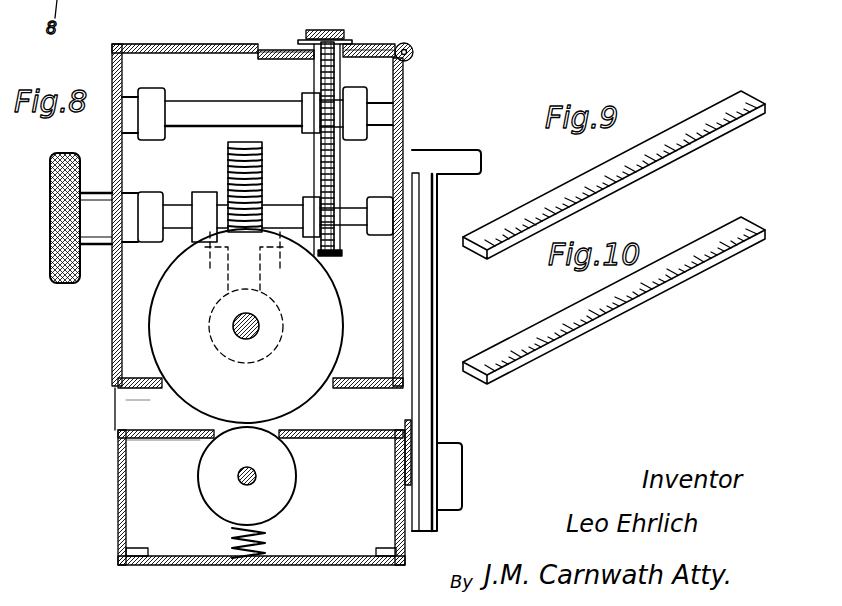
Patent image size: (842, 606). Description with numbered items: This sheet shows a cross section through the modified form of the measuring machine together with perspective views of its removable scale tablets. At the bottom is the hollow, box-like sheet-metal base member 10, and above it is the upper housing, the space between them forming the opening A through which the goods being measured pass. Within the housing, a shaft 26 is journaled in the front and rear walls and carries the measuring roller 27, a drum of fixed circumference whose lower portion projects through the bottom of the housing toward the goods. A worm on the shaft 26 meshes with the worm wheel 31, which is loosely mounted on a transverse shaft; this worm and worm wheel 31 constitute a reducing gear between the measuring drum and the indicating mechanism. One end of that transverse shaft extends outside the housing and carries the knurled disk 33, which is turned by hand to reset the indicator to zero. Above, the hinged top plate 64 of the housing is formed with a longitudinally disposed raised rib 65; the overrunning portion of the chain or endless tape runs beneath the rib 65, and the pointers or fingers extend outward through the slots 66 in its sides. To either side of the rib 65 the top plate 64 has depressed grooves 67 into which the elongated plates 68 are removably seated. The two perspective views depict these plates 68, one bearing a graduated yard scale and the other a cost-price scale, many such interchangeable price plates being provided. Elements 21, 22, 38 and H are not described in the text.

In FIG. 8, the base member 10 is at (115, 508).
In FIG. 8, the roller shaft 21 is at (258, 478).
In FIG. 8, the pressure roller 22 is at (212, 474).
In FIG. 8, the shaft 26 is at (244, 328).
In FIG. 8, the measuring roller 27 is at (246, 326).
In FIG. 8, the worm wheel 31 is at (254, 174).
In FIG. 8, the disk 33 is at (68, 286).
In FIG. 8, the upper shaft 38 is at (206, 126).
In FIG. 8, the top plate 64 is at (198, 45).
In FIG. 8, the raised rib 65 is at (331, 35).
In FIG. 8, the slots 66 is at (302, 42).
In FIG. 8, the grooves 67 is at (272, 60).
In FIG. 8, the elongated plates 68 is at (263, 50).
In FIG. 9, the elongated plates 68 is at (734, 103).
In FIG. 10, the elongated plates 68 is at (572, 338).
In FIG. 8, the opening A is at (147, 406).
In FIG. 8, the partition wall H is at (185, 440).